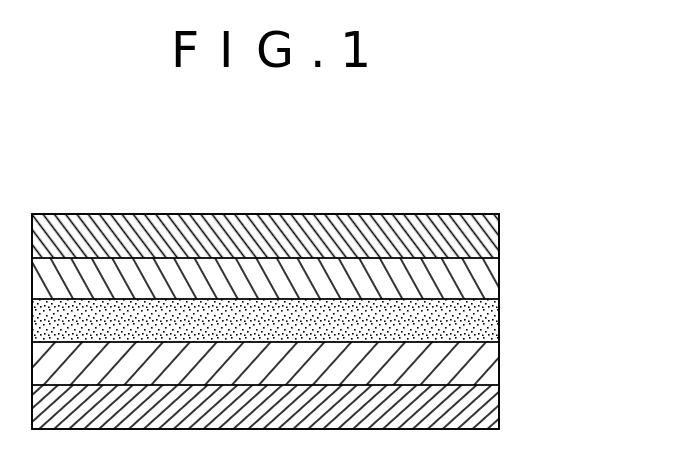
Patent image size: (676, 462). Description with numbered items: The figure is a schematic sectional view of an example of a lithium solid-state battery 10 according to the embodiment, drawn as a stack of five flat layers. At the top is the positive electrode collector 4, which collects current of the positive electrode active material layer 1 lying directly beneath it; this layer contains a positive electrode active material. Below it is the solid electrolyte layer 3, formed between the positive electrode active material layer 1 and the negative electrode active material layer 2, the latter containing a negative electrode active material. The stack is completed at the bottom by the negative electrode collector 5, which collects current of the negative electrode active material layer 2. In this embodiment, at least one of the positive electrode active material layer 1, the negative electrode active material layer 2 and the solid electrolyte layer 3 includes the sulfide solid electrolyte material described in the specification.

The lithium solid-state battery 10 is at (464, 190).
The positive electrode collector 4 is at (489, 229).
The positive electrode active material layer 1 is at (478, 277).
The solid electrolyte layer 3 is at (482, 318).
The negative electrode active material layer 2 is at (478, 360).
The negative electrode collector 5 is at (478, 403).